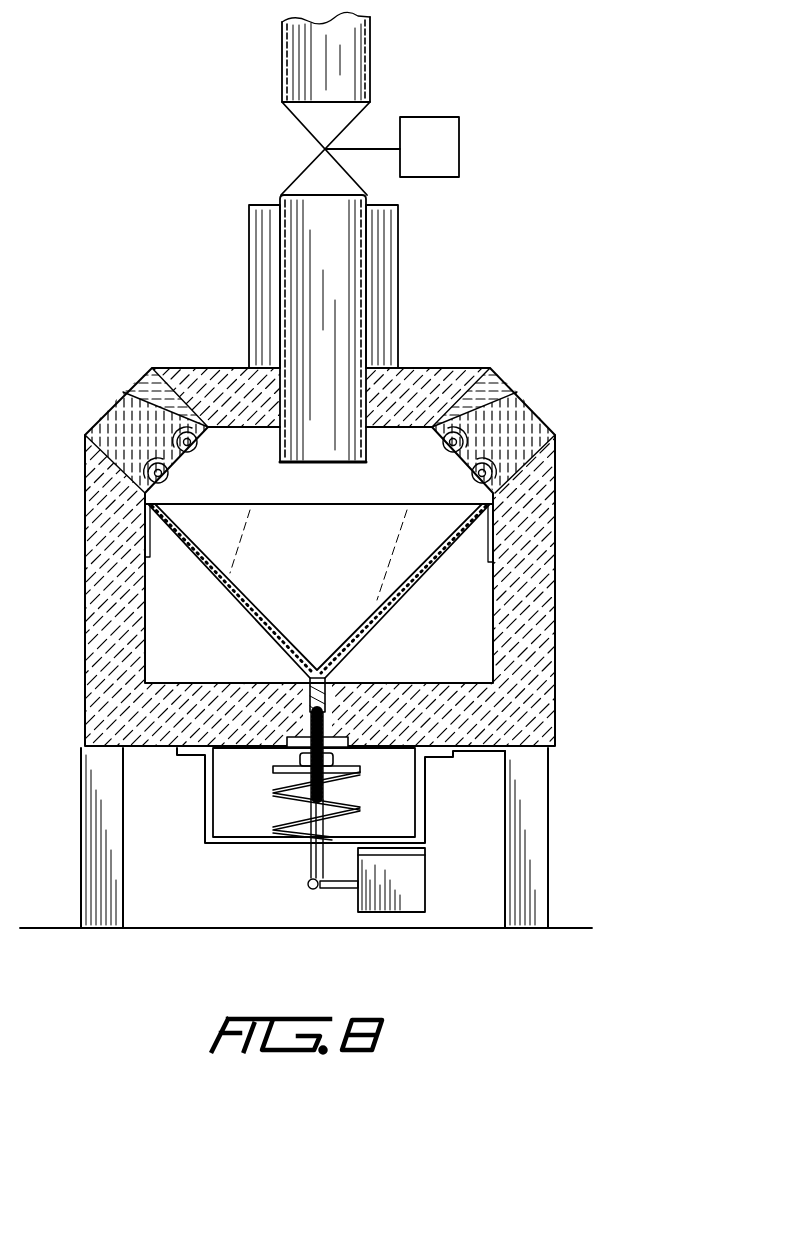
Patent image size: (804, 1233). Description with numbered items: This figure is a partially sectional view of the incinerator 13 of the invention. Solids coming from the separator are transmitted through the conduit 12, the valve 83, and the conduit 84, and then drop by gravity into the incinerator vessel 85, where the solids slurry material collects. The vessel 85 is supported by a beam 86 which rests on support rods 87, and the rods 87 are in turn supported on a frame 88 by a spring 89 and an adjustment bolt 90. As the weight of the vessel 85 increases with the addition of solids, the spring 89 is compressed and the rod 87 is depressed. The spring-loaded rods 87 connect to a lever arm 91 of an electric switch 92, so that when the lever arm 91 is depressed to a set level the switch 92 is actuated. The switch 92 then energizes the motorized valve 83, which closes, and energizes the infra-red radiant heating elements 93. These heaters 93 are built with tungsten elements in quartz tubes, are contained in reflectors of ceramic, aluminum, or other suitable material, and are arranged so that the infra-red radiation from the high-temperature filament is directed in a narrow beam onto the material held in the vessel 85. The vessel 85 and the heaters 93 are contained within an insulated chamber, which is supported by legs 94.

The conduit 12 is at (352, 52).
The valve 83 is at (446, 159).
The conduit 84 is at (350, 278).
The incinerator 13 is at (567, 451).
The infra-red radiant heating elements 93 is at (191, 450).
The incinerator vessel 85 is at (240, 603).
The beam 86 is at (327, 678).
The adjustment bolt 90 is at (300, 760).
The support rods 87 is at (328, 789).
The spring 89 is at (357, 808).
The frame 88 is at (427, 798).
The electric switch 92 is at (412, 883).
The lever arm 91 is at (307, 886).
The legs 94 is at (98, 805).